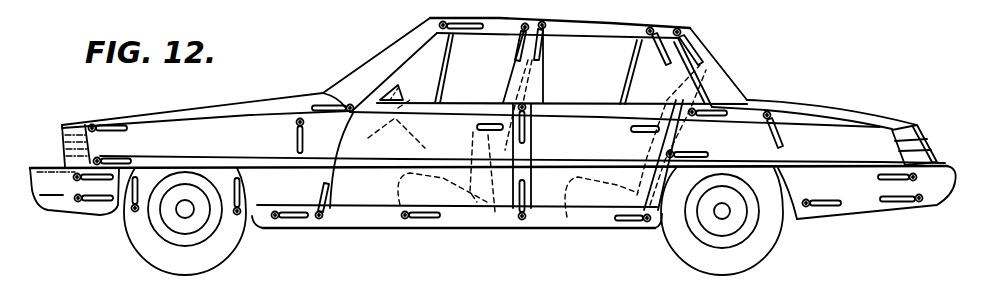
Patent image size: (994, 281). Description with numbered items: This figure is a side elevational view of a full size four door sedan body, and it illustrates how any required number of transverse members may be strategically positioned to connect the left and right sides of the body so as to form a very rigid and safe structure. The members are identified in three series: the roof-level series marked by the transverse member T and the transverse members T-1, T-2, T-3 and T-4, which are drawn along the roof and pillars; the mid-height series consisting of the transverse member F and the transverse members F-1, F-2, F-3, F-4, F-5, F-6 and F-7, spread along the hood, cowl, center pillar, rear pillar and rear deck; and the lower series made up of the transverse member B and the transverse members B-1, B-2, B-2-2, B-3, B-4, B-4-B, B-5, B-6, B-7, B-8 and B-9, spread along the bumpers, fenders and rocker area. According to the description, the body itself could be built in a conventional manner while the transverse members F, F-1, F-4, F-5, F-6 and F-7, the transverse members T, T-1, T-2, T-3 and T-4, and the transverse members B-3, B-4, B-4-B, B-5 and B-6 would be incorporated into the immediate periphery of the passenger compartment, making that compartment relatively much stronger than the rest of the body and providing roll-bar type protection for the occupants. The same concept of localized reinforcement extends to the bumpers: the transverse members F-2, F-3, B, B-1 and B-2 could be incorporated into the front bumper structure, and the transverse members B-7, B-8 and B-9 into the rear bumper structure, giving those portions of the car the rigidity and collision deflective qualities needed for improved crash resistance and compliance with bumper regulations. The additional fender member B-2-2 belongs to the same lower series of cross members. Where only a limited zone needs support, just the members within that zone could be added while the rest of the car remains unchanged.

The transverse member B is at (77, 173).
The transverse member B-1 is at (78, 202).
The transverse member B-2 is at (135, 212).
The transverse member B-2-2 is at (237, 215).
The transverse member B-3 is at (297, 219).
The transverse member B-4 is at (320, 218).
The transverse member B-4-B is at (415, 218).
The transverse member B-5 is at (522, 220).
The transverse member B-6 is at (615, 222).
The transverse member B-7 is at (806, 207).
The transverse member B-8 is at (915, 179).
The transverse member B-9 is at (903, 204).
The transverse member F is at (322, 106).
The transverse member F-1 is at (298, 140).
The transverse member F-2 is at (121, 124).
The transverse member F-3 is at (118, 158).
The transverse member F-4 is at (526, 118).
The transverse member F-5 is at (712, 110).
The transverse member F-6 is at (676, 153).
The transverse member F-7 is at (781, 125).
The transverse member T is at (480, 30).
The transverse member T-1 is at (522, 31).
The transverse member T-2 is at (543, 29).
The transverse member T-3 is at (660, 50).
The transverse member T-4 is at (690, 52).